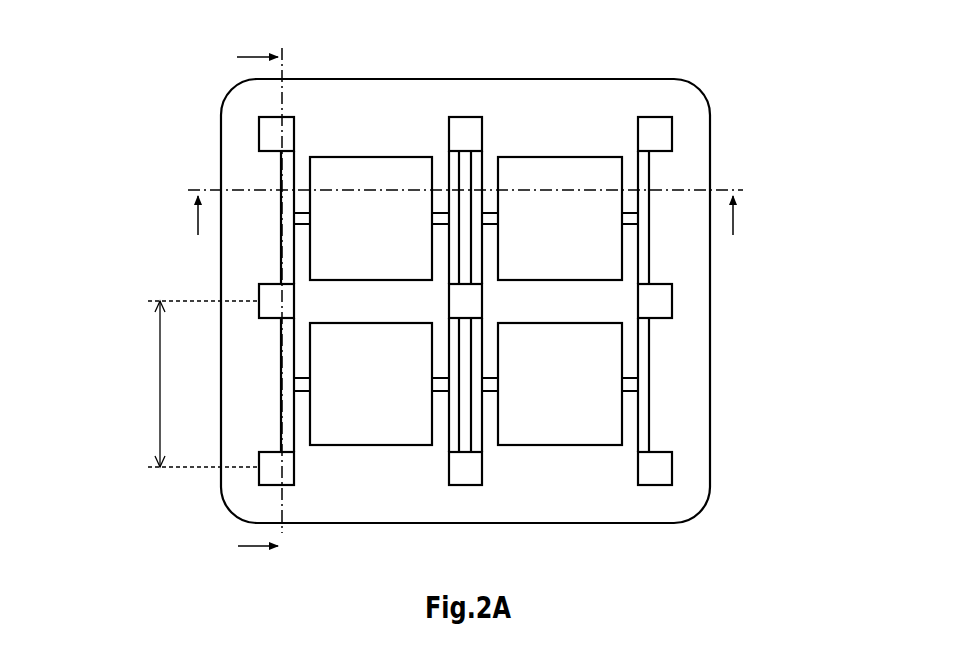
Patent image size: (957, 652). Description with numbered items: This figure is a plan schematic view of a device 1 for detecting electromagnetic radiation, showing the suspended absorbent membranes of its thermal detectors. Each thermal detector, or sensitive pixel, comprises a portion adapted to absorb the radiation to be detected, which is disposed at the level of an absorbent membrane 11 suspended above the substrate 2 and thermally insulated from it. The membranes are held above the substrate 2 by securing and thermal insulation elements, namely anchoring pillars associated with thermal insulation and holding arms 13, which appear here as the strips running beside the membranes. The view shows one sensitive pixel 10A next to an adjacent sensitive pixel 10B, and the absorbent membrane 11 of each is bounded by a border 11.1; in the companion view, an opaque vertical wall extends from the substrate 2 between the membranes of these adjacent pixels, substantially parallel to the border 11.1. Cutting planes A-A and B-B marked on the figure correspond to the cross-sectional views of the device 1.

The detection device 1 is at (127, 67).
The substrate 2 is at (715, 490).
The sensitive pixel 10A is at (378, 110).
The adjacent sensitive pixel 10B is at (565, 110).
The absorbent membrane 11 is at (372, 452).
The border of the absorbent membrane 11.1 is at (590, 447).
The thermal insulation and holding arms 13 is at (650, 247).